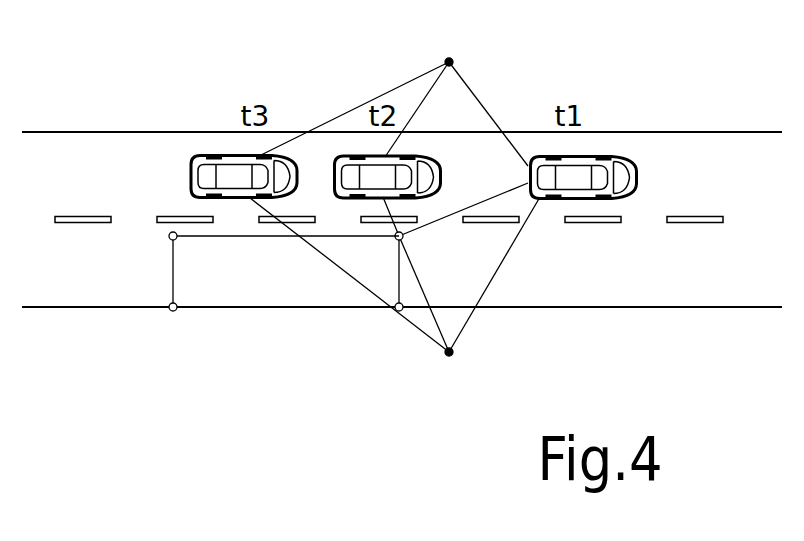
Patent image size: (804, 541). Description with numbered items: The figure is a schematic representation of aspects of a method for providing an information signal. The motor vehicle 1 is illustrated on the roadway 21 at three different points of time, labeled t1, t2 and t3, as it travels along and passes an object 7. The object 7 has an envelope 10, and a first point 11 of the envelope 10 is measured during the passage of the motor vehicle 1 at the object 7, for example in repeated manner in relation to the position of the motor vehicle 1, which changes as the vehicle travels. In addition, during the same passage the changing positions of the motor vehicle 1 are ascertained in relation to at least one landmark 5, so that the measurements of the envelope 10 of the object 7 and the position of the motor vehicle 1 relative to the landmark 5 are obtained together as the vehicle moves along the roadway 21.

The motor vehicle 1 is at (191, 178).
The landmark 5 is at (449, 58).
The object 7 is at (278, 288).
The envelope 10 is at (173, 263).
The first point 11 is at (404, 237).
The roadway 21 is at (712, 307).